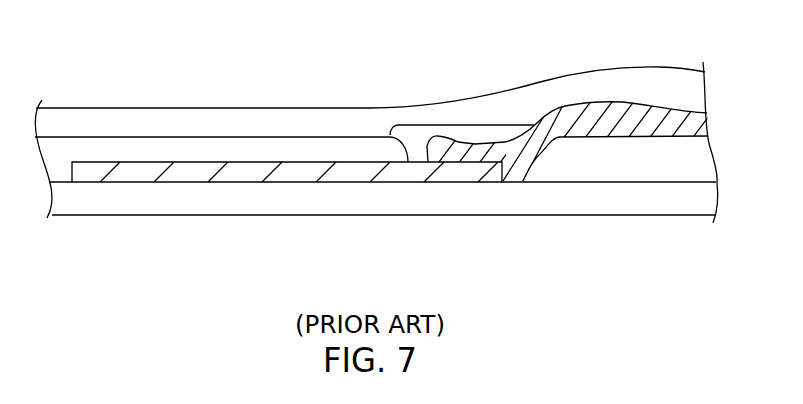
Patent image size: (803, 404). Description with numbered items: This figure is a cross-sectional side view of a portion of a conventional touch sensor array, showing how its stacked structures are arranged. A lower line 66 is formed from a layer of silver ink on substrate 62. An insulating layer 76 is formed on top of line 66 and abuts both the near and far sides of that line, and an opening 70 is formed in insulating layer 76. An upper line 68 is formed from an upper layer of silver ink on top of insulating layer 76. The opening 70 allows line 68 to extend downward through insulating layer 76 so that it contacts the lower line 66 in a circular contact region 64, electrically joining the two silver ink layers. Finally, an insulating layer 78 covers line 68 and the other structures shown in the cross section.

The substrate 62 is at (427, 200).
The circular contact region 64 is at (470, 182).
The line 66 is at (143, 173).
The line 68 is at (622, 102).
The opening 70 is at (484, 125).
The insulating layer 76 is at (230, 145).
The insulating layer 78 is at (137, 122).